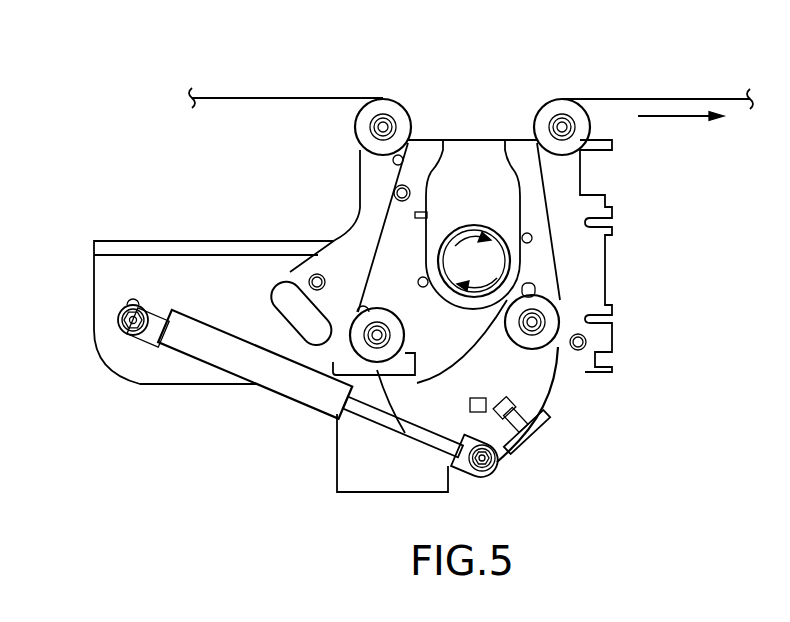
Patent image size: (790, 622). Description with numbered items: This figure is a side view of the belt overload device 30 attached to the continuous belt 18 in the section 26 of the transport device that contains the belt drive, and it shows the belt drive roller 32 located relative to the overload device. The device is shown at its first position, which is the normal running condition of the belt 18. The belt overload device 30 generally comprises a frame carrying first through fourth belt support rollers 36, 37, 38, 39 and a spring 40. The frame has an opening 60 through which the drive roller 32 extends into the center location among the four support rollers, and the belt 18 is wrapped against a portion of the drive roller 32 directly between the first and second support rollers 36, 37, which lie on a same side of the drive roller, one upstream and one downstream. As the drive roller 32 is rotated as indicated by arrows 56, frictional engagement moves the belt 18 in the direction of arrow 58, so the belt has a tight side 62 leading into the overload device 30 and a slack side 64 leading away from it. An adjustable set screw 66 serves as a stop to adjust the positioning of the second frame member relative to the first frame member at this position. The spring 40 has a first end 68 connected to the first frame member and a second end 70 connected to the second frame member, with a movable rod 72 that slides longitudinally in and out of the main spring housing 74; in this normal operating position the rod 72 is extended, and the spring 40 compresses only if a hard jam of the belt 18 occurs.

The continuous belt 18 is at (222, 97).
The section with belt drive and belt overload device 26 is at (244, 50).
The belt overload device 30 is at (108, 374).
The belt drive roller 32 is at (490, 262).
The first belt support roller 36 is at (365, 326).
The second belt support roller 37 is at (545, 340).
The third belt support roller 38 is at (362, 128).
The fourth belt support roller 39 is at (558, 112).
The spring 40 is at (193, 352).
The arrows indicating drive roller rotation 56 is at (472, 236).
The arrow indicating belt movement 58 is at (668, 118).
The opening 60 is at (448, 170).
The tight side 62 is at (270, 98).
The slack side 64 is at (650, 99).
The adjustable set screw 66 is at (548, 450).
The first end of spring 68 is at (118, 316).
The second end of spring 70 is at (498, 470).
The movable rod 72 is at (382, 428).
The main spring housing 74 is at (243, 370).